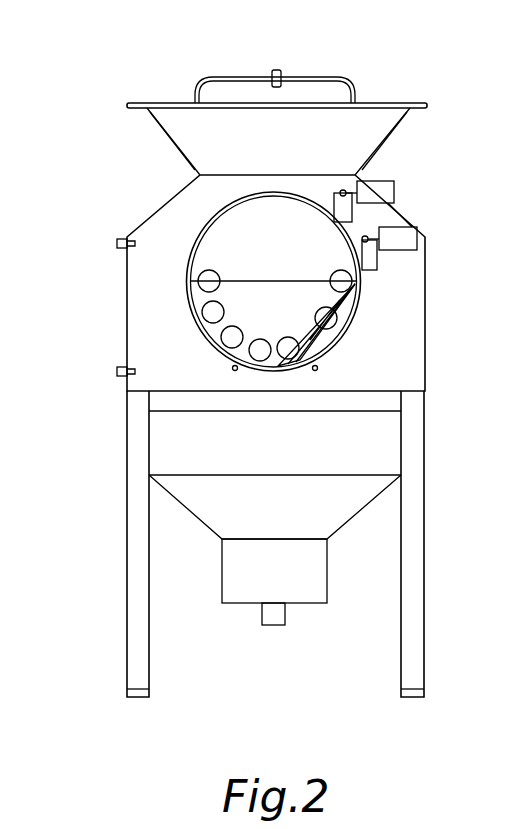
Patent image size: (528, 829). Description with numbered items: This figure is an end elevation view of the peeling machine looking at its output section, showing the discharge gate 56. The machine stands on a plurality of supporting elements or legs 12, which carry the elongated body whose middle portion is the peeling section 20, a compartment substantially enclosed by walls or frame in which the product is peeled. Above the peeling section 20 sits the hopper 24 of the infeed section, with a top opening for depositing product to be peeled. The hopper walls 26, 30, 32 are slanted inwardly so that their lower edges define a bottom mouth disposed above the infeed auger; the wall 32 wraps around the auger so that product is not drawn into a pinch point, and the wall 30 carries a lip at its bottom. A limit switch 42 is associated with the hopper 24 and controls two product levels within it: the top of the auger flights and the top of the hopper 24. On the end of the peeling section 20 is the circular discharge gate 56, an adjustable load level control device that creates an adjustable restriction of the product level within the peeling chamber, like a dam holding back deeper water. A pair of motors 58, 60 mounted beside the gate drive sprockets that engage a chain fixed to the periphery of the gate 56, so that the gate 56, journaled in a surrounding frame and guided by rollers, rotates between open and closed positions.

The legs 12 is at (127, 650).
The peeling section 20 is at (156, 212).
The hopper 24 is at (166, 103).
The hopper wall 26 is at (180, 148).
The hopper wall 30 is at (390, 130).
The hopper wall 32 is at (280, 160).
The limit switch 42 is at (276, 70).
The discharge gate 56 is at (278, 322).
The motor 58 is at (422, 211).
The motor 60 is at (400, 167).